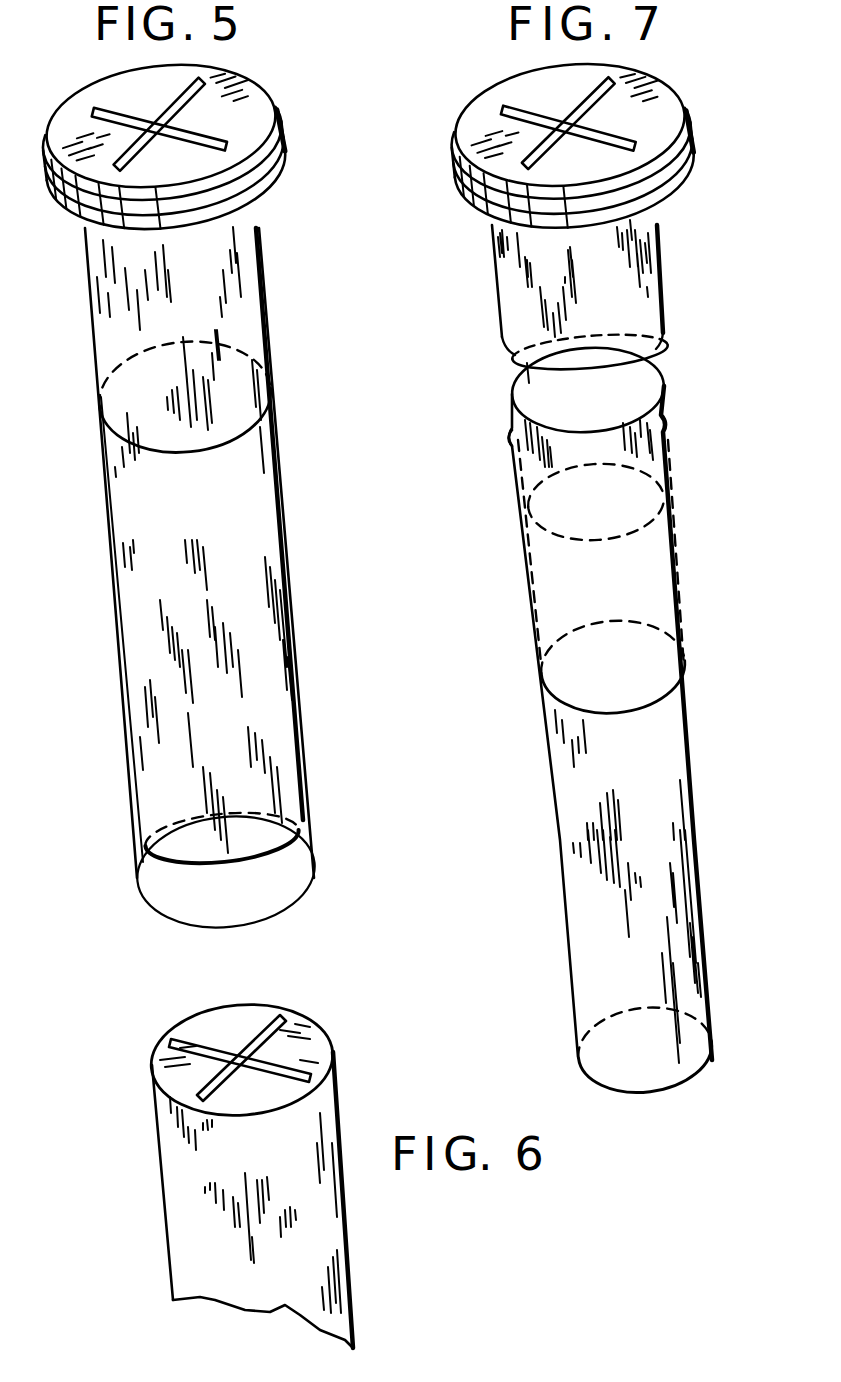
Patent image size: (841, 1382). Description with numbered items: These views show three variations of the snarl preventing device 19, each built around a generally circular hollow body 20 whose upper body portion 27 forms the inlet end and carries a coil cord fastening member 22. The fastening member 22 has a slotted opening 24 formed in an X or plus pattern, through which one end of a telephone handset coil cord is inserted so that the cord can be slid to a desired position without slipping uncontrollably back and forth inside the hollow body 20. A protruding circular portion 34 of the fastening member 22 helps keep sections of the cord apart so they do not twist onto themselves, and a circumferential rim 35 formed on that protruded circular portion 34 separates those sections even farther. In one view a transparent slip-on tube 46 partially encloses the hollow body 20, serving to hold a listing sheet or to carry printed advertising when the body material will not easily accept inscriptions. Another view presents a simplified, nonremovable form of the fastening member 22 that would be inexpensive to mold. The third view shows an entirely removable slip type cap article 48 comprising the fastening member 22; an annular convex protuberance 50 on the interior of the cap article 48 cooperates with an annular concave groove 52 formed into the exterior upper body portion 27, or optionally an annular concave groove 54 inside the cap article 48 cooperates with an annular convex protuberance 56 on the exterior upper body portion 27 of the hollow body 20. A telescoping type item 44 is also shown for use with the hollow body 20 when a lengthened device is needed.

In FIG. 5, the device 19 is at (335, 222).
In FIG. 6, the device 19 is at (377, 1078).
In FIG. 5, the hollow body 20 is at (268, 347).
In FIG. 7, the hollow body 20 is at (530, 577).
In FIG. 7, the coil cord fastening member 22 is at (510, 143).
In FIG. 6, the coil cord fastening member 22 is at (185, 1078).
In FIG. 6, the slotted opening 24 is at (237, 1060).
In FIG. 7, the upper body portion 27 is at (647, 437).
In FIG. 7, the protruding circular portion 34 is at (665, 92).
In FIG. 7, the circumferential rim 35 is at (473, 197).
In FIG. 7, the telescoping type item 44 is at (555, 788).
In FIG. 5, the slip-on tube 46 is at (300, 682).
In FIG. 7, the cap article 48 is at (612, 288).
In FIG. 7, the annular convex protuberance 50 is at (642, 222).
In FIG. 7, the annular concave groove 52 is at (662, 420).
In FIG. 7, the annular concave groove 54 is at (503, 230).
In FIG. 7, the annular convex protuberance 56 is at (510, 440).